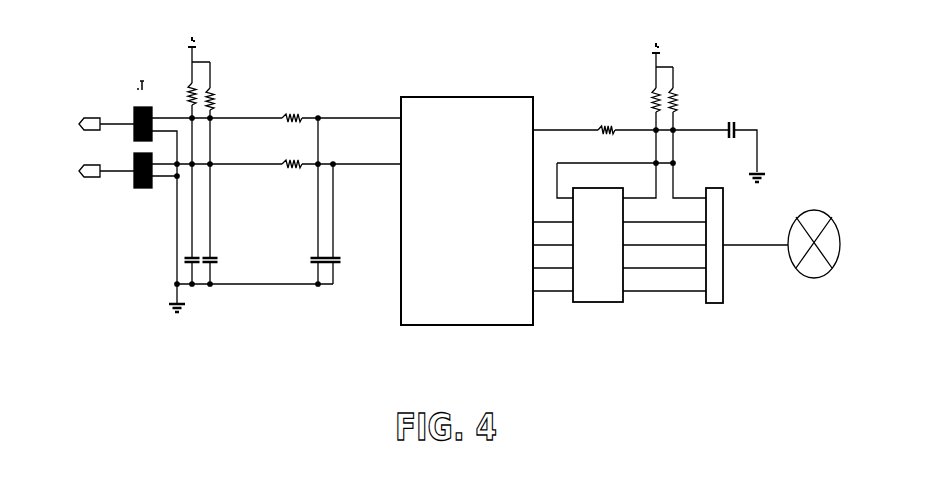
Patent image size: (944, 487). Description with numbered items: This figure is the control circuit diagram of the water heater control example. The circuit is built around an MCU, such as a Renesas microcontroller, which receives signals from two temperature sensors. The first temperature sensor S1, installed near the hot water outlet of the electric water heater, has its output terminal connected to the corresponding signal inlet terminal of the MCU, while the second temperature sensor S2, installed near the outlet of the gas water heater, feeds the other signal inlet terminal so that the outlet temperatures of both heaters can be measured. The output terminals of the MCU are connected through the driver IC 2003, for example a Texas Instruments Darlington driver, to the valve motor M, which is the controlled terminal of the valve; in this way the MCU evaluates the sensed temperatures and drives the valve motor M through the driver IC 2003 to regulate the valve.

The first temperature sensor S1 is at (106, 109).
The second temperature sensor S2 is at (106, 156).
The element MCU is at (467, 211).
The driver IC 2003 is at (598, 245).
The valve motor M is at (781, 221).